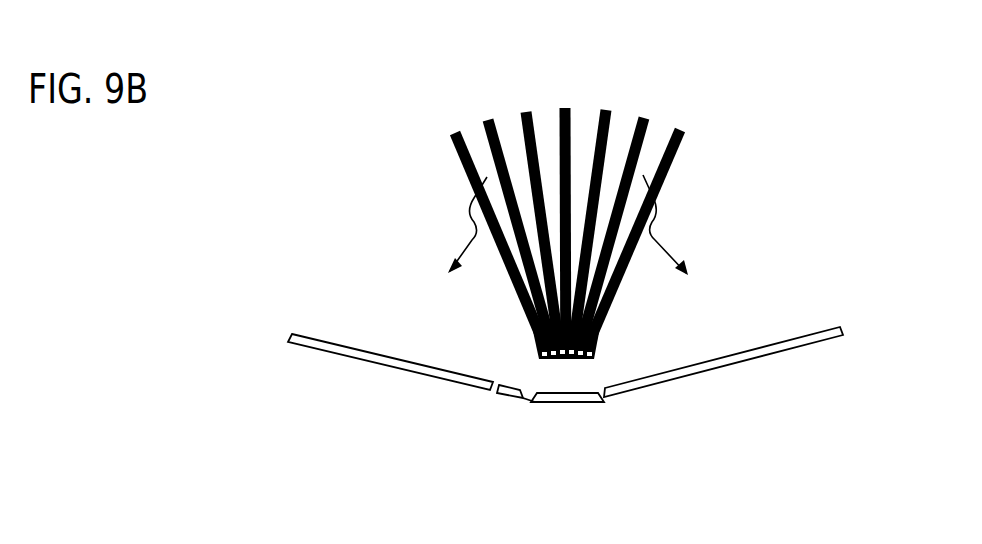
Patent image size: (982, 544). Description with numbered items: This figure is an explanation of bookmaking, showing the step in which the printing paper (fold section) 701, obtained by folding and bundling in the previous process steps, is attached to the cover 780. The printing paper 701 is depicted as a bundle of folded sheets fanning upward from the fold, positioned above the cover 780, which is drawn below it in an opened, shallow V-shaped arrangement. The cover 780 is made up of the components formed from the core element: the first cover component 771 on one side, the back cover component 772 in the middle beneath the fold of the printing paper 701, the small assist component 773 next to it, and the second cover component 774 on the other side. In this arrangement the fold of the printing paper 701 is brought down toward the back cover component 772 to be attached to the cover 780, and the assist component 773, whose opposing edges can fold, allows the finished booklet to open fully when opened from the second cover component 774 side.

The printing paper (fold section) 701 is at (649, 116).
The first cover component 771 is at (788, 352).
The back cover component 772 is at (567, 402).
The assist component 773 is at (510, 398).
The second cover component 774 is at (298, 347).
The cover 780 is at (708, 391).